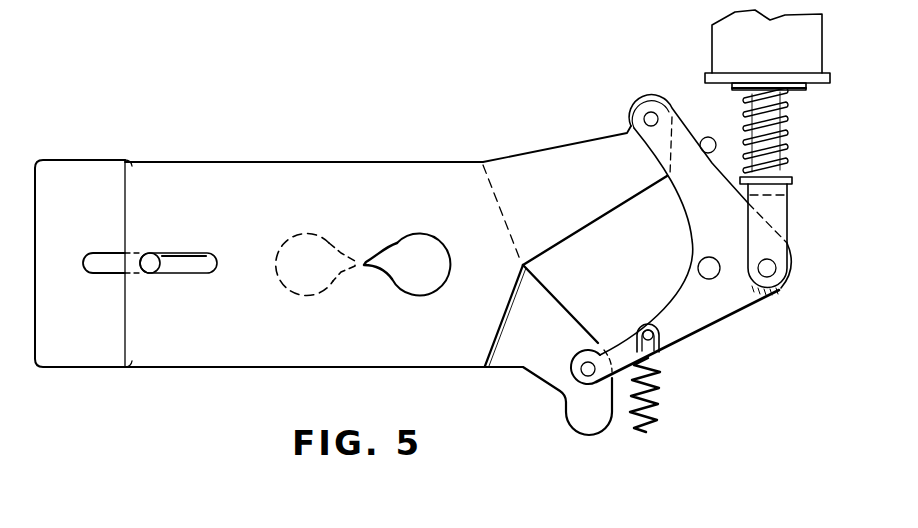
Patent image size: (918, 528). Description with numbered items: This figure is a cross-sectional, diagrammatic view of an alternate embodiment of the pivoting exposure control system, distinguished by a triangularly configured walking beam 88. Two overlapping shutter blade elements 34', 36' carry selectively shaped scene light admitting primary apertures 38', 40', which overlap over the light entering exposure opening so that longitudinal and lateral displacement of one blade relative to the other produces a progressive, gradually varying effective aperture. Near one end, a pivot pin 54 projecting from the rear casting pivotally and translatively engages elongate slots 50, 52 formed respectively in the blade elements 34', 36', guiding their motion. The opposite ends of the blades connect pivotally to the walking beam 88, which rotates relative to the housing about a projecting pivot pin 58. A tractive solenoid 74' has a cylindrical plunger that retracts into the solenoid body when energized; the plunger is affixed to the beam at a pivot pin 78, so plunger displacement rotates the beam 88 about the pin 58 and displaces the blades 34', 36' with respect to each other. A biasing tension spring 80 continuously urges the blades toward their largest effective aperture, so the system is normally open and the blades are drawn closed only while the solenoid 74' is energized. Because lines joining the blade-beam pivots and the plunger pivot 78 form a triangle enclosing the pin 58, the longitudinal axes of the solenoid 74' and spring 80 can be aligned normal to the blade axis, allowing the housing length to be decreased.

The shutter blade element 34' is at (91, 237).
The shutter blade element 36' is at (396, 272).
The scene light admitting primary aperture 38' is at (322, 252).
The scene light admitting primary aperture 40' is at (424, 251).
The elongate slot 50 is at (104, 273).
The elongate slot 52 is at (204, 273).
The pivot pin 54 is at (151, 274).
The pivot pin 58 is at (710, 264).
The solenoid 74' is at (788, 149).
The pivot pin 78 is at (784, 288).
The biasing tension spring 80 is at (652, 391).
The triangularly configured walking beam 88 is at (683, 108).